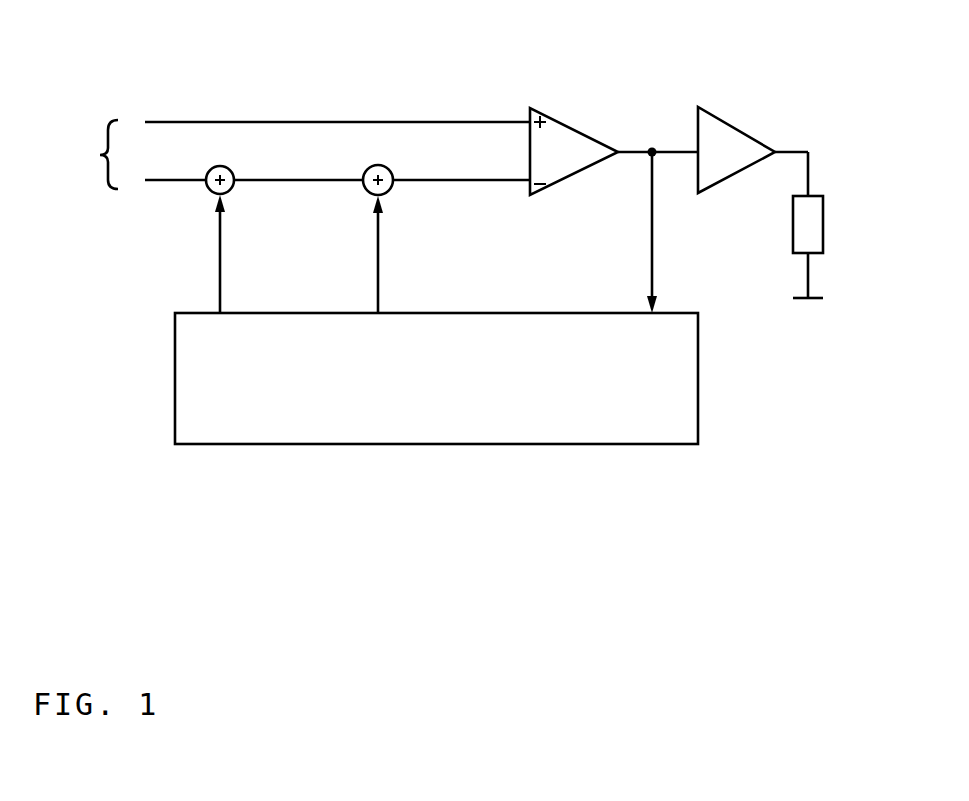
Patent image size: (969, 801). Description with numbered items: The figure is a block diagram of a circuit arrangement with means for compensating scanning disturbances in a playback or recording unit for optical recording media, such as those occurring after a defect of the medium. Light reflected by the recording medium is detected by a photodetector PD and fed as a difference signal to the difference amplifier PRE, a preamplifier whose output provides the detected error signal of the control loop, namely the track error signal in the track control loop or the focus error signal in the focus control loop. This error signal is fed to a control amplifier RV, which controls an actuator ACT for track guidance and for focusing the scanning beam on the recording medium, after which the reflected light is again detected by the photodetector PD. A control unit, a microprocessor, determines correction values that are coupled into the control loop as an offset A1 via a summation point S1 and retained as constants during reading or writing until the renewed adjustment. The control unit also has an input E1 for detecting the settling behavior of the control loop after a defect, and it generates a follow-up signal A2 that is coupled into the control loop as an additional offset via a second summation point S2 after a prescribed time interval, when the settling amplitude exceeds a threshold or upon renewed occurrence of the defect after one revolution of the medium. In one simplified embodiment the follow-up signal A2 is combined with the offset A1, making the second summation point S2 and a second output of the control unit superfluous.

The photodetector PD is at (83, 154).
The summation point S1 is at (223, 166).
The second summation point S2 is at (381, 166).
The difference amplifier PRE is at (574, 122).
The control amplifier RV is at (736, 120).
The actuator ACT is at (849, 224).
The offset A1 is at (215, 271).
The follow-up signal A2 is at (373, 271).
The input of the control unit E1 is at (646, 250).